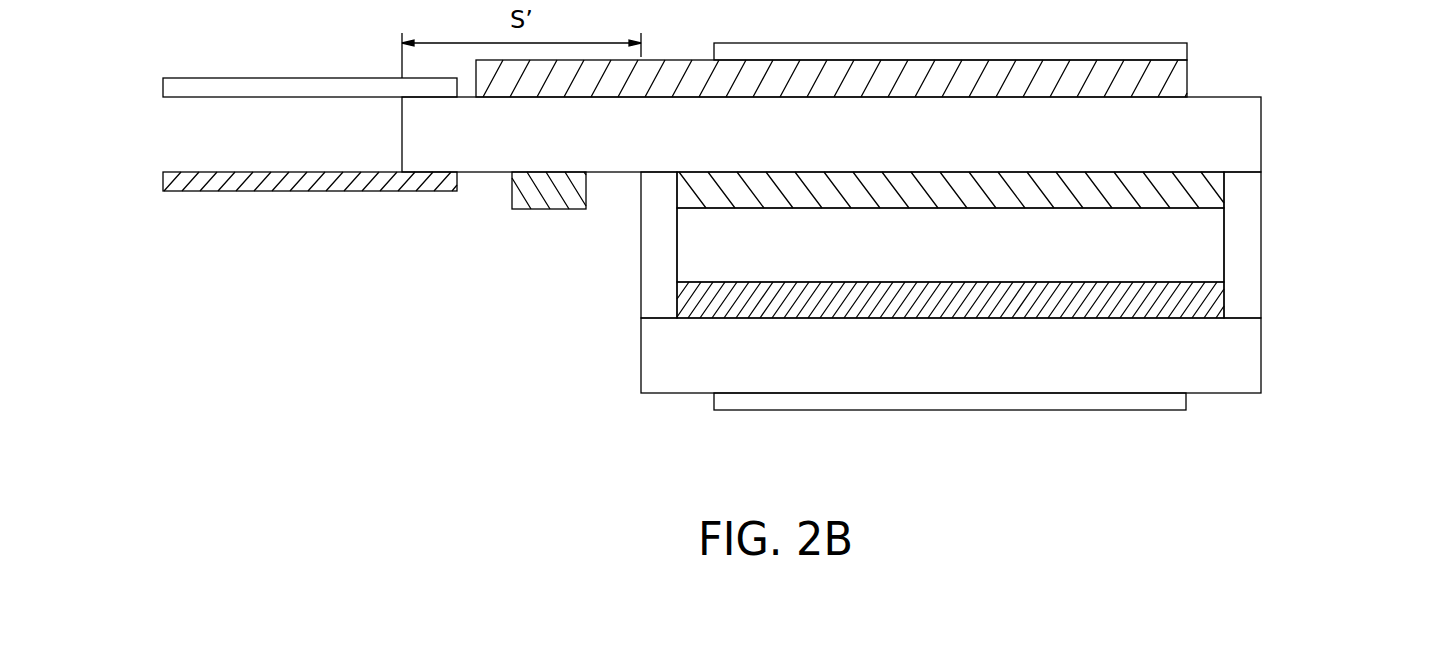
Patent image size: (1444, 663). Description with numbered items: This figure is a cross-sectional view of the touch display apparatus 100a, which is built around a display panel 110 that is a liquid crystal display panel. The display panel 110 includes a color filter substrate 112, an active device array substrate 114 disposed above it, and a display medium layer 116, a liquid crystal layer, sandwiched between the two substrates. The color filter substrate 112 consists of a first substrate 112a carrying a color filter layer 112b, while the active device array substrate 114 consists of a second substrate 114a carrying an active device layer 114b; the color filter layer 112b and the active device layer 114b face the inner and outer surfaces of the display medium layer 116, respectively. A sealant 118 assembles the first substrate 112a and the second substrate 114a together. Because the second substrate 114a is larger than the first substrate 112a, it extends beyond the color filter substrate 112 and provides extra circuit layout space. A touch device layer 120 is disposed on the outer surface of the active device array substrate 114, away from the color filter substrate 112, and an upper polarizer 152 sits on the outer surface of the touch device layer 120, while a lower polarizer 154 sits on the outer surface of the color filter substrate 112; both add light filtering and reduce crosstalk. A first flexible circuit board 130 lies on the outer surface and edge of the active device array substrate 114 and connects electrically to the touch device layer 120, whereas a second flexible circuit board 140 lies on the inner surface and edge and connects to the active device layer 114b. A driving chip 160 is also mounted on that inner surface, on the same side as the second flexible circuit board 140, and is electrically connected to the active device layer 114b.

The touch display apparatus 100a is at (761, 282).
The display panel 110 is at (910, 245).
The color filter substrate 112 is at (1005, 337).
The first substrate 112a is at (1255, 337).
The color filter layer 112b is at (1213, 292).
The active device array substrate 114 is at (886, 152).
The second substrate 114a is at (1261, 155).
The active device layer 114b is at (1213, 183).
The display medium layer 116 is at (1213, 220).
The sealant 118 is at (1255, 252).
The touch device layer 120 is at (1188, 77).
The first flexible circuit board 130 is at (161, 88).
The second flexible circuit board 140 is at (161, 180).
The upper polarizer 152 is at (1188, 51).
The lower polarizer 154 is at (1186, 403).
The driving chip 160 is at (543, 202).